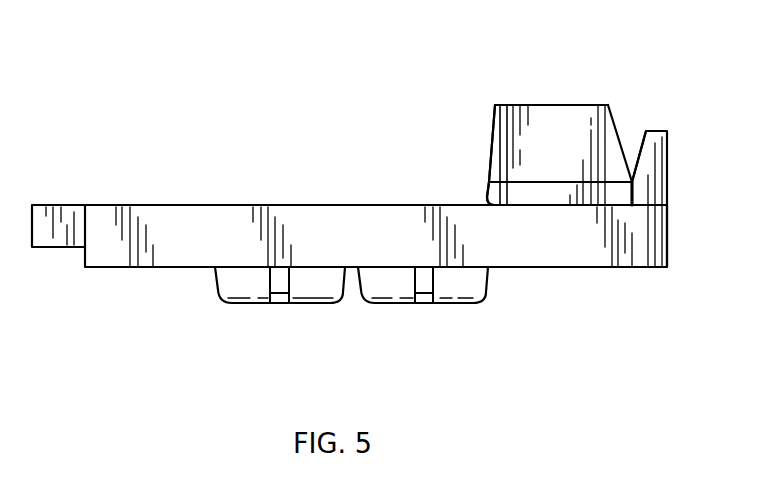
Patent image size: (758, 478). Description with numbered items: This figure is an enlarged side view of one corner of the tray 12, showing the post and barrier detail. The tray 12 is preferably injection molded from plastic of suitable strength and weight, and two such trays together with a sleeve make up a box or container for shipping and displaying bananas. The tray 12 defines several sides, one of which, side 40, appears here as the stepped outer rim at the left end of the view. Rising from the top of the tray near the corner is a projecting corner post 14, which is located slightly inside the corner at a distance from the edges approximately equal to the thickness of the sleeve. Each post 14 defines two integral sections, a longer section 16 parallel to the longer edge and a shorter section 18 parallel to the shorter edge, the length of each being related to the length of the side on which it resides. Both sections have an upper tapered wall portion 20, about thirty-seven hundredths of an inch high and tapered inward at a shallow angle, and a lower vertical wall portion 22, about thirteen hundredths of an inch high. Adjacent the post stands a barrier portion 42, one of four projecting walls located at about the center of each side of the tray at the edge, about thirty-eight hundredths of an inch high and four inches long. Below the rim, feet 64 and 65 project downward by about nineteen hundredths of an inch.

The tray 12 is at (115, 195).
The projecting corner post 14 is at (502, 70).
The post section 16 is at (478, 145).
The post section 18 is at (638, 110).
The upper tapered wall portion 20 is at (562, 112).
The lower vertical wall portion 22 is at (490, 197).
The side 40 is at (132, 258).
The barrier portion 42 is at (660, 163).
The foot 64 is at (403, 288).
The foot 65 is at (250, 288).